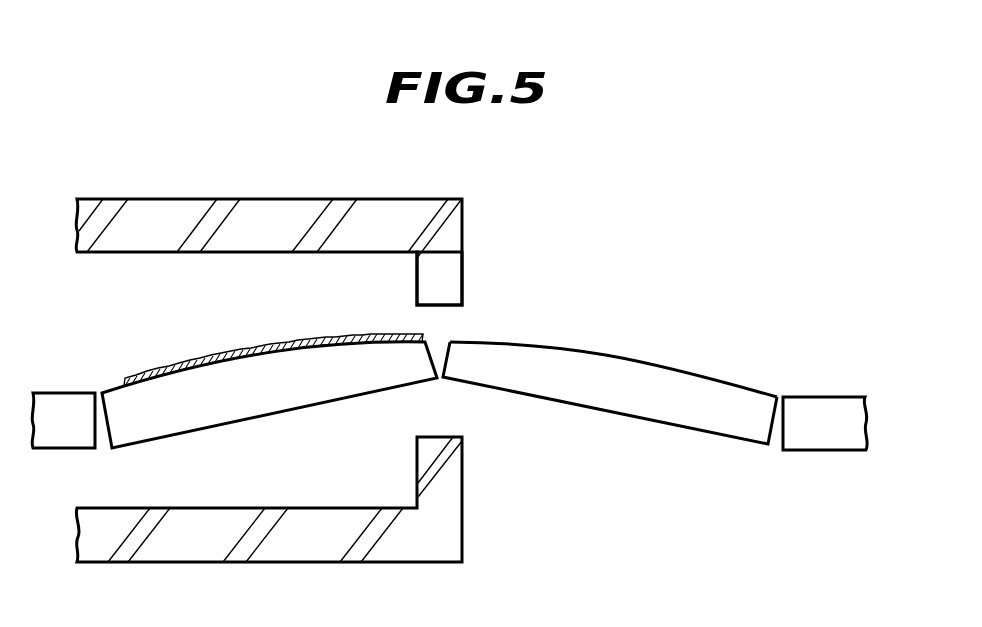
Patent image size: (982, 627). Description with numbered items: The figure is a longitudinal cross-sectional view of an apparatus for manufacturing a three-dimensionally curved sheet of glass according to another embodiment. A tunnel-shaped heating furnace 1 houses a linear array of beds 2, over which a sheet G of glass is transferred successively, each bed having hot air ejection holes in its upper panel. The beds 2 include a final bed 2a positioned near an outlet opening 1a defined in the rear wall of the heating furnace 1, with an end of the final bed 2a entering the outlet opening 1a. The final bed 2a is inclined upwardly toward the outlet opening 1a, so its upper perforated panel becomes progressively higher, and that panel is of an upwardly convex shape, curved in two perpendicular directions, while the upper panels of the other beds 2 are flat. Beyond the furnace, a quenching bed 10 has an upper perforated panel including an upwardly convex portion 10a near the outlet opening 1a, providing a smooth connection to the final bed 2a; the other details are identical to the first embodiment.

The heating furnace 1 is at (264, 212).
The outlet opening 1a is at (440, 306).
The bed 2 is at (67, 400).
The final bed 2a is at (242, 420).
The sheet of glass G is at (253, 346).
The quenching bed 10 is at (652, 408).
The upwardly convex portion 10a is at (560, 347).